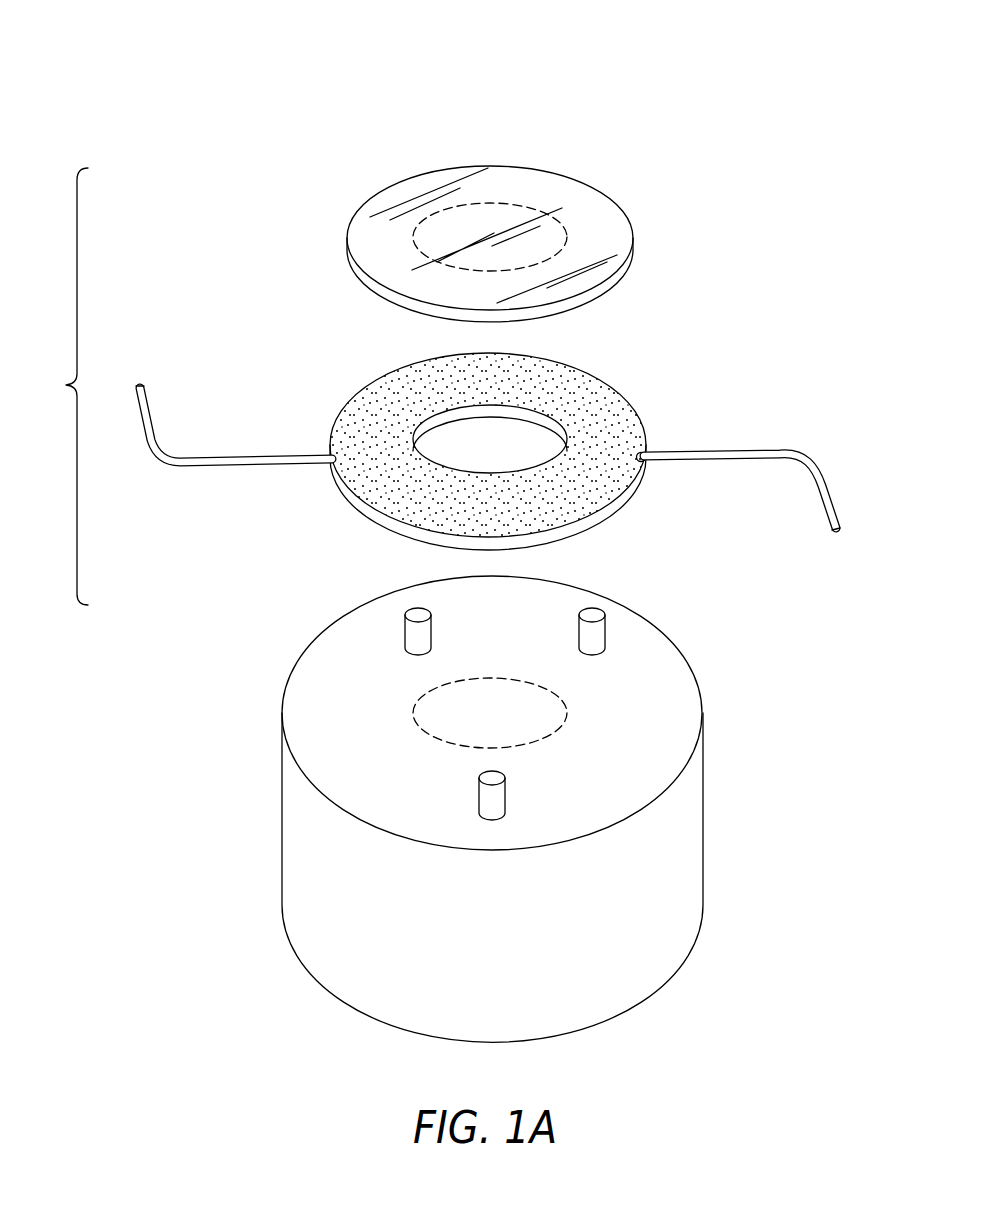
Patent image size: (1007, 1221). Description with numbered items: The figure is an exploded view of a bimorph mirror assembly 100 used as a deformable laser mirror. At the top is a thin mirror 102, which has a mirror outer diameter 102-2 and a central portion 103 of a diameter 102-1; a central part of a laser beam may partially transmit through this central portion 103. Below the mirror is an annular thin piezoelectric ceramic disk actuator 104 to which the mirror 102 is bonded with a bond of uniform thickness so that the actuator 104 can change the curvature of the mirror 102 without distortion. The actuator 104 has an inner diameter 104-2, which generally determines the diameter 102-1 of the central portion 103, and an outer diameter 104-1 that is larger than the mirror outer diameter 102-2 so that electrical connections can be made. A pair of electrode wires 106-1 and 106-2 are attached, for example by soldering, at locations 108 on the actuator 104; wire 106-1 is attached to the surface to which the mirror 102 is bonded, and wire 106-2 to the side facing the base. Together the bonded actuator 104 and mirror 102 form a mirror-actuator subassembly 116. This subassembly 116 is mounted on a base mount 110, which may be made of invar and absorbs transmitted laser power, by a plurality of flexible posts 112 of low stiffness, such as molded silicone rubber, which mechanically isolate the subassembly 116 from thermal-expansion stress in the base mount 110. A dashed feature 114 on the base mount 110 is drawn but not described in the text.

The bimorph mirror assembly 100 is at (770, 118).
The thin mirror 102 is at (370, 233).
The diameter of central portion 102-1 is at (518, 207).
The mirror outer diameter 102-2 is at (634, 246).
The central portion of mirror 103 is at (454, 222).
The annular thin piezoelectric ceramic disk actuator 104 is at (374, 398).
The outer diameter of actuator 104-1 is at (349, 490).
The inner diameter of actuator 104-2 is at (542, 410).
The electrode wire 106-1 is at (810, 448).
The electrode wire 106-2 is at (167, 457).
The attachment locations 108 is at (645, 449).
The base mount 110 is at (705, 871).
The flexible posts 112 is at (478, 807).
The recess 114 is at (574, 713).
The mirror-actuator subassembly 116 is at (55, 386).